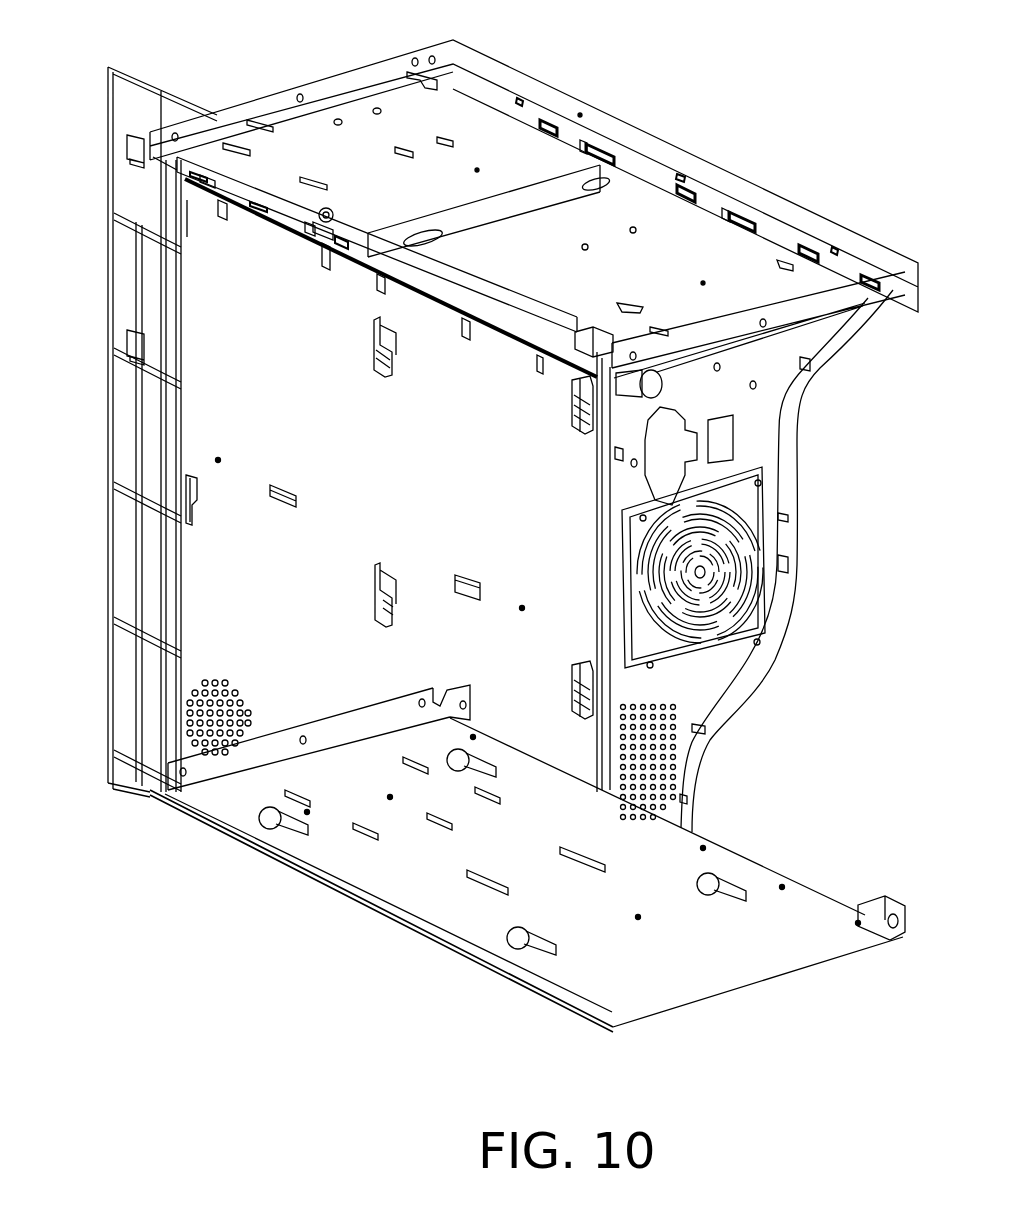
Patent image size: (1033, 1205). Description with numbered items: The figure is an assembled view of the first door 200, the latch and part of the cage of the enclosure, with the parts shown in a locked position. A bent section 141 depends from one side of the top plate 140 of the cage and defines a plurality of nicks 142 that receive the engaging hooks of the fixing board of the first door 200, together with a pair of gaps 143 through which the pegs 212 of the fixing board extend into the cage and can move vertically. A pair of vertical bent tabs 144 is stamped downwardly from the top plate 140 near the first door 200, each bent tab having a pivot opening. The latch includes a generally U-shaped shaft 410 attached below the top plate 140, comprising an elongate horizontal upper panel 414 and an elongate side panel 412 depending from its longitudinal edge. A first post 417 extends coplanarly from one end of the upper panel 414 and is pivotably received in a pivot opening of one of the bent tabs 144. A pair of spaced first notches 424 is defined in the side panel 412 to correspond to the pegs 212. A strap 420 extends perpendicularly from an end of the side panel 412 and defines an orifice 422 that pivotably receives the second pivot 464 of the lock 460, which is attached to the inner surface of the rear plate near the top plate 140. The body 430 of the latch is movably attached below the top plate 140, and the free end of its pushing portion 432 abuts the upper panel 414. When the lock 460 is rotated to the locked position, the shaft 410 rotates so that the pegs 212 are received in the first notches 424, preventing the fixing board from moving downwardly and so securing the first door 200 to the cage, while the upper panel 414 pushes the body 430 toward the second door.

The top plate 140 is at (612, 118).
The bent section 141 is at (222, 186).
The nicks 142 is at (682, 178).
The gaps 143 is at (742, 214).
The bent tabs 144 is at (328, 207).
The first door 200 is at (225, 578).
The pegs 212 is at (322, 250).
The shaft 410 is at (493, 341).
The side panel 412 is at (425, 283).
The upper panel 414 is at (470, 281).
The first post 417 is at (310, 223).
The strap 420 is at (580, 374).
The orifice 422 is at (575, 408).
The first notches 424 is at (345, 246).
The body 430 is at (505, 183).
The pushing portion 432 is at (540, 183).
The lock 460 is at (665, 386).
The second pivot 464 is at (587, 430).